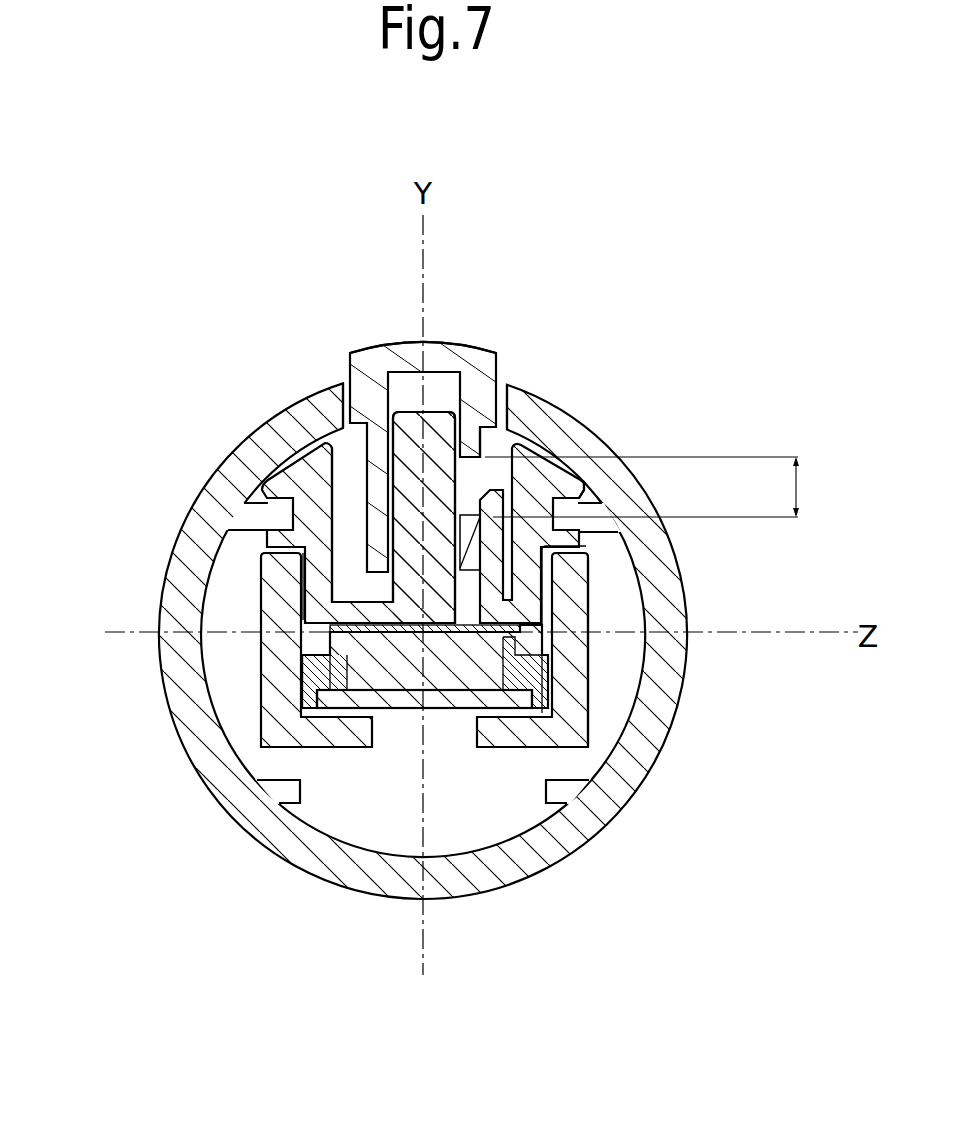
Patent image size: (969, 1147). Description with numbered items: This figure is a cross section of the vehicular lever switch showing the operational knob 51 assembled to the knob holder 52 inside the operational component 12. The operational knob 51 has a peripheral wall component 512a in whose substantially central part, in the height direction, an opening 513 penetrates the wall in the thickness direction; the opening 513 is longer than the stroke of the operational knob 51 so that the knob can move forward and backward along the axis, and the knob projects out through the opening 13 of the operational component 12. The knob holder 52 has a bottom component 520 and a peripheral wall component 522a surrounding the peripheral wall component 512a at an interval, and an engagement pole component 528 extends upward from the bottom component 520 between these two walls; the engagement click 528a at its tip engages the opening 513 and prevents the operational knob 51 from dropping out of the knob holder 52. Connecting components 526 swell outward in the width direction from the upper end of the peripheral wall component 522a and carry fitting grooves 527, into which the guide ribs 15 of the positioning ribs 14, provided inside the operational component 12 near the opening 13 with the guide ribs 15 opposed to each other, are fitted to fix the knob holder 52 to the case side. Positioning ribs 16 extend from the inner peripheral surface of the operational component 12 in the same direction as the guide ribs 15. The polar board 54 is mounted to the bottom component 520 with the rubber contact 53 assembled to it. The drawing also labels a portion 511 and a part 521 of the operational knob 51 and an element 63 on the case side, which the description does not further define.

The operational component 12 is at (195, 570).
The opening 13 is at (350, 408).
The positioning rib 14 is at (608, 533).
The guide rib 15 is at (287, 516).
The positioning rib 16 is at (295, 803).
The operational knob 51 is at (481, 340).
The knob head 511 is at (493, 351).
The peripheral wall component 512a is at (518, 446).
The opening 513 is at (465, 440).
The knob holder 52 is at (554, 647).
The bottom component 520 is at (380, 549).
The shaft 521 is at (437, 437).
The peripheral wall component 522a is at (548, 622).
The connecting component 526 is at (582, 500).
The fitting groove 527 is at (580, 507).
The engagement pole component 528 is at (425, 666).
The engagement click 528a is at (446, 640).
The rubber contact 53 is at (315, 699).
The polar board 54 is at (395, 715).
The holder foot 63 is at (597, 701).